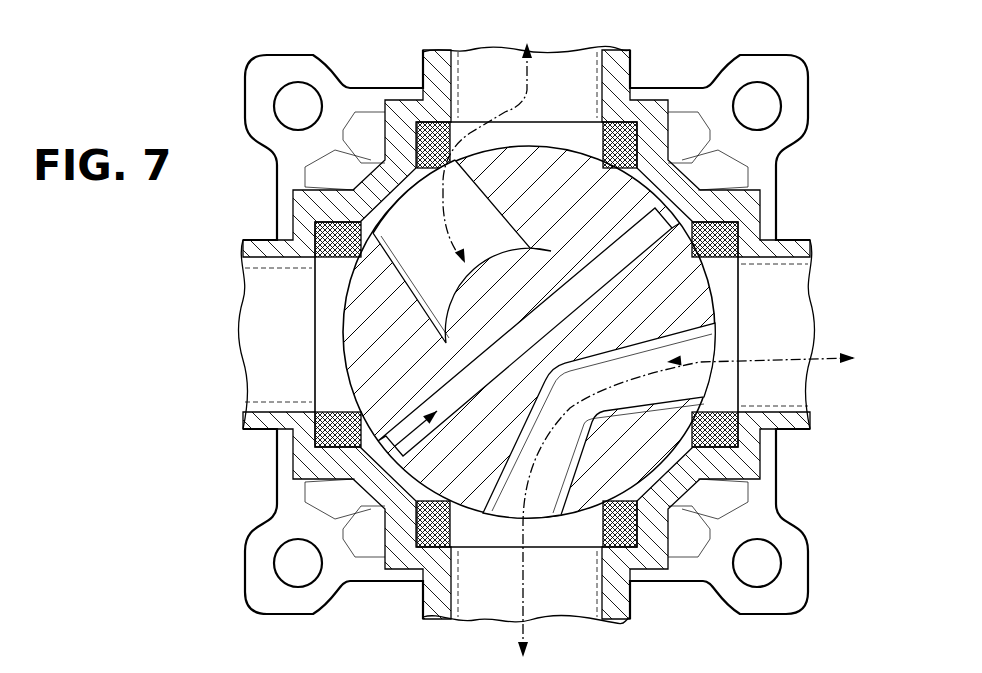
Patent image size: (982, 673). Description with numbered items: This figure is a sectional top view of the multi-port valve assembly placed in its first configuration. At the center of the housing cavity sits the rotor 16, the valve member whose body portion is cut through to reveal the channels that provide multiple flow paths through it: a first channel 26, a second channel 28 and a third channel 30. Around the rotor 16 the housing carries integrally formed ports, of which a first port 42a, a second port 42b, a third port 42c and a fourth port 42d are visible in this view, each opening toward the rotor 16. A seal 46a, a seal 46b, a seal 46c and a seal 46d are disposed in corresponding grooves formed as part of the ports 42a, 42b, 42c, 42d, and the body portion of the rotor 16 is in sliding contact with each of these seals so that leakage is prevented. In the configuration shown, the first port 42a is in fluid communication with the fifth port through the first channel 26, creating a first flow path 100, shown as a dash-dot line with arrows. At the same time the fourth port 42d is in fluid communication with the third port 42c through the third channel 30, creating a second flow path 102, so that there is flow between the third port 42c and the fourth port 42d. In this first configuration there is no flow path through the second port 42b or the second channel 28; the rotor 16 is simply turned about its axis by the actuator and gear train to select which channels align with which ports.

The rotor 16 is at (378, 340).
The first channel 26 is at (430, 222).
The second channel 28 is at (388, 434).
The third channel 30 is at (712, 330).
The first port 42a is at (573, 78).
The second port 42b is at (263, 390).
The third port 42c is at (553, 600).
The fourth port 42d is at (790, 275).
The seal 46a is at (452, 145).
The seal 46b is at (340, 411).
The seal 46c is at (450, 532).
The seal 46d is at (720, 411).
The first flow path 100 is at (540, 88).
The second flow path 102 is at (815, 370).